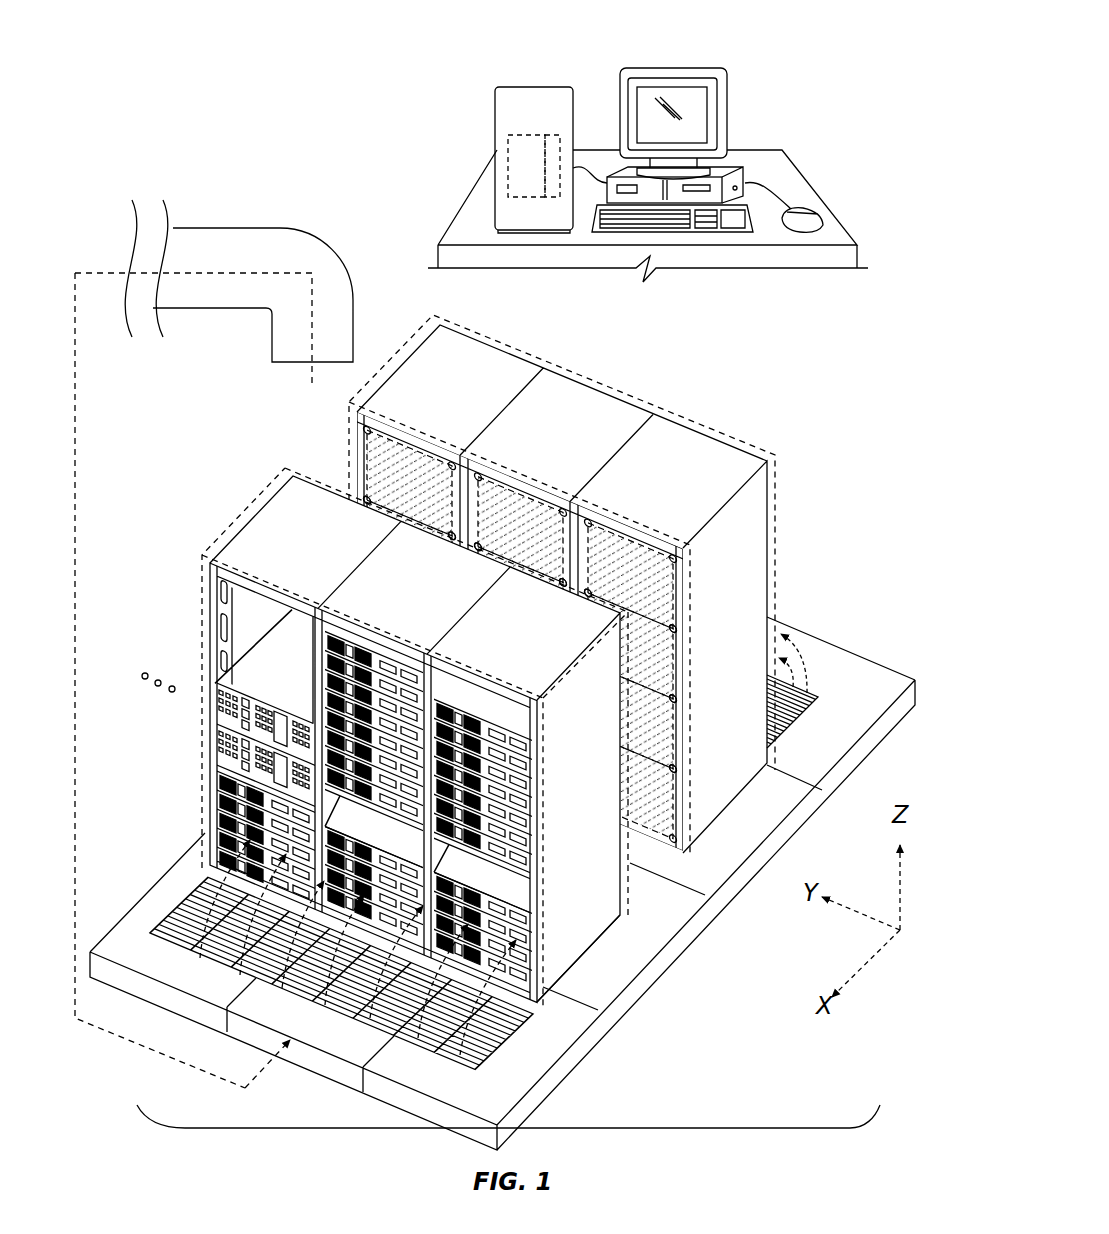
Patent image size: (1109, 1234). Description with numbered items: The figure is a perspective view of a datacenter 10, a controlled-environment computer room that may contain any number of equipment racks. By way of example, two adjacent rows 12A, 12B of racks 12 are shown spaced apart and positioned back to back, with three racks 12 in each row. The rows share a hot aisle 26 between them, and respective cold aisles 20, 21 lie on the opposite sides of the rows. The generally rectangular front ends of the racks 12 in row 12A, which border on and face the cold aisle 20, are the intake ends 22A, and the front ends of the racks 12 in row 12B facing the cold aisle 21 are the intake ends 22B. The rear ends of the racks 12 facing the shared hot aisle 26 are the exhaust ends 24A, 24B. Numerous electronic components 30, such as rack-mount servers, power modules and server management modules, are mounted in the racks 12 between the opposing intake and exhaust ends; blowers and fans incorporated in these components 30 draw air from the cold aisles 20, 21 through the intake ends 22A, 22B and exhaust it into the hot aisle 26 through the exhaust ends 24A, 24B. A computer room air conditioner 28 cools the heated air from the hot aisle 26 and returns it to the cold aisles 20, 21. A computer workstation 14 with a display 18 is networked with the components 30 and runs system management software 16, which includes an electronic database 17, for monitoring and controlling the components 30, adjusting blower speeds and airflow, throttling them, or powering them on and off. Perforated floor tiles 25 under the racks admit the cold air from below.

The datacenter 10 is at (222, 88).
The racks 12 is at (486, 657).
The first row of racks 12A is at (411, 727).
The second row of racks 12B is at (594, 579).
The computer workstation 14 is at (648, 148).
The system management software 16 is at (539, 160).
The electronic database 17 is at (553, 151).
The display 18 is at (690, 66).
The cold aisle 20 is at (502, 883).
The cold aisle 21 is at (812, 730).
The intake ends 22A is at (197, 595).
The intake ends 22B is at (480, 330).
The exhaust ends 24A is at (283, 472).
The exhaust ends 24B is at (425, 435).
The perforated floor tiles 25 is at (486, 1048).
The hot aisle 26 is at (690, 870).
The computer room air conditioner 28 is at (222, 215).
The electronic components 30 is at (394, 698).